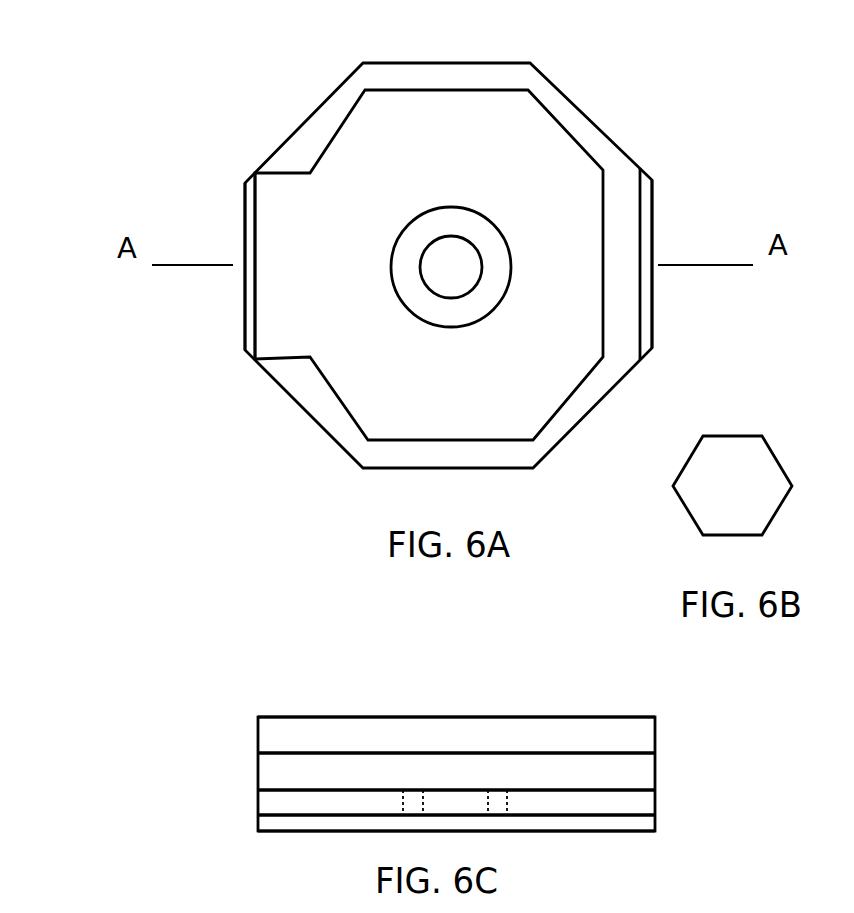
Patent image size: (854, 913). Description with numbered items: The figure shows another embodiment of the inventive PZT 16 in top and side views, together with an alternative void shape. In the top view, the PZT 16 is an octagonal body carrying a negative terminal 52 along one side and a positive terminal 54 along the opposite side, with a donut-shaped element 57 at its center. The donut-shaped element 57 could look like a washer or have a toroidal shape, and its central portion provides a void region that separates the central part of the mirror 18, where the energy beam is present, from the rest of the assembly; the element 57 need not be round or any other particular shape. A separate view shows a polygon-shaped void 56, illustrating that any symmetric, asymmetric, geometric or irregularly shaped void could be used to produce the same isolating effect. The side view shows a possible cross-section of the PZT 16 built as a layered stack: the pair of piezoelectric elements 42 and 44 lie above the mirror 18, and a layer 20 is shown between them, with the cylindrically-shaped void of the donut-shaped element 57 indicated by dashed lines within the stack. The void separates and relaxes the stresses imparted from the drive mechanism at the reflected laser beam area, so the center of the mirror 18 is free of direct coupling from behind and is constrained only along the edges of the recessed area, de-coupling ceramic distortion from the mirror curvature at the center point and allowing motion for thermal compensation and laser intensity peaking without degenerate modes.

In FIG. 6A, the PZT 16 is at (74, 130).
In FIG. 6C, the PZT 16 is at (395, 721).
In FIG. 6A, the negative terminal 52 is at (245, 203).
In FIG. 6A, the positive terminal 54 is at (652, 200).
In FIG. 6A, the donut-shaped element 57 is at (500, 230).
In FIG. 6C, the donut-shaped element 57 is at (423, 792).
In FIG. 6B, the void 56 is at (782, 466).
In FIG. 6C, the piezoelectric element 42 is at (258, 738).
In FIG. 6C, the piezoelectric element 44 is at (258, 770).
In FIG. 6C, the substrate layer 20 is at (258, 797).
In FIG. 6C, the mirror 18 is at (258, 818).